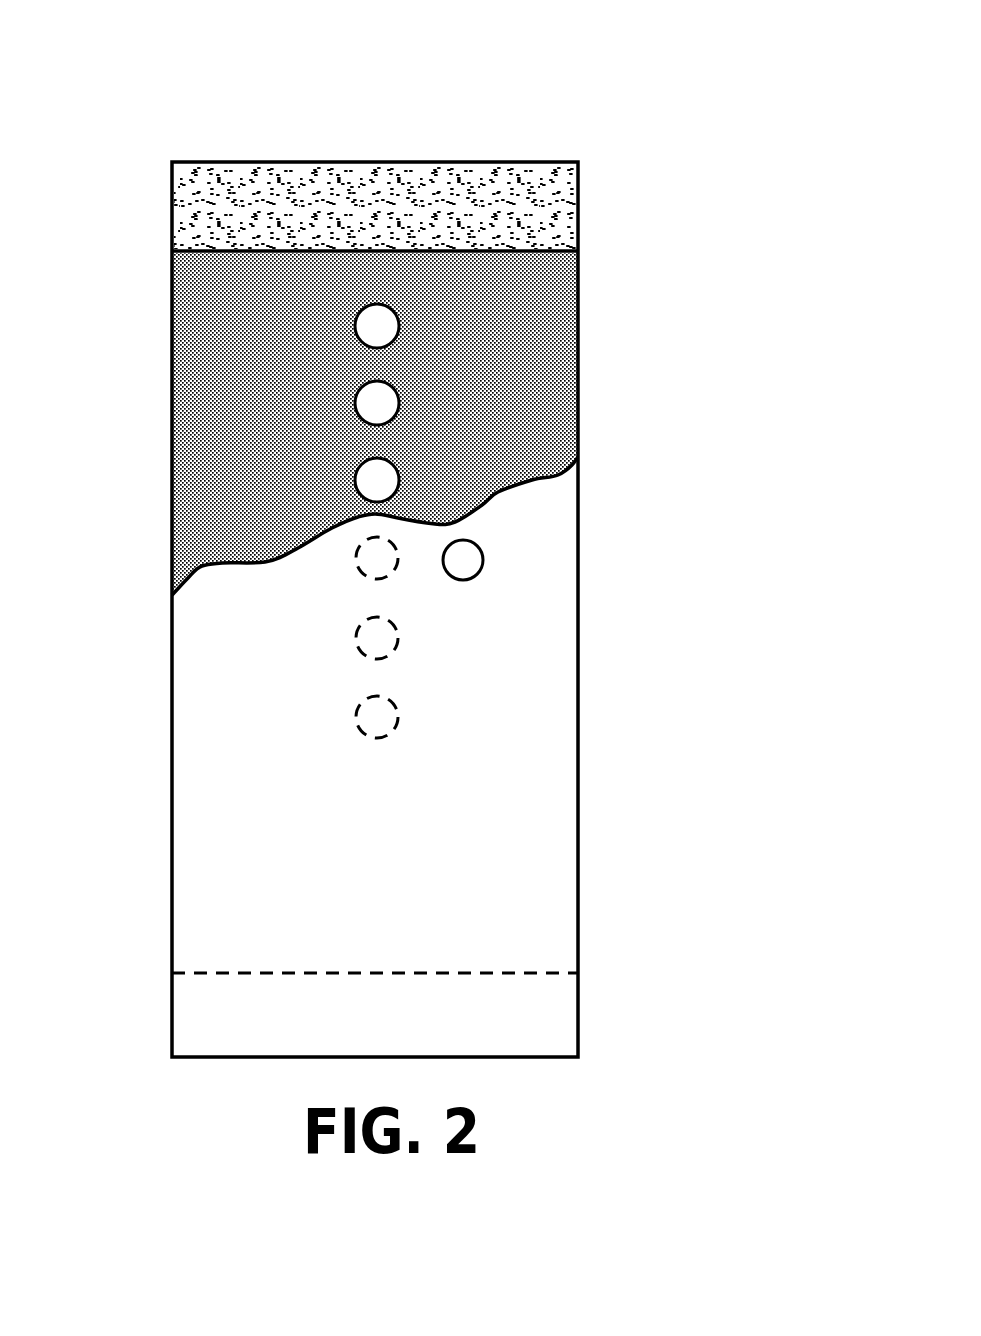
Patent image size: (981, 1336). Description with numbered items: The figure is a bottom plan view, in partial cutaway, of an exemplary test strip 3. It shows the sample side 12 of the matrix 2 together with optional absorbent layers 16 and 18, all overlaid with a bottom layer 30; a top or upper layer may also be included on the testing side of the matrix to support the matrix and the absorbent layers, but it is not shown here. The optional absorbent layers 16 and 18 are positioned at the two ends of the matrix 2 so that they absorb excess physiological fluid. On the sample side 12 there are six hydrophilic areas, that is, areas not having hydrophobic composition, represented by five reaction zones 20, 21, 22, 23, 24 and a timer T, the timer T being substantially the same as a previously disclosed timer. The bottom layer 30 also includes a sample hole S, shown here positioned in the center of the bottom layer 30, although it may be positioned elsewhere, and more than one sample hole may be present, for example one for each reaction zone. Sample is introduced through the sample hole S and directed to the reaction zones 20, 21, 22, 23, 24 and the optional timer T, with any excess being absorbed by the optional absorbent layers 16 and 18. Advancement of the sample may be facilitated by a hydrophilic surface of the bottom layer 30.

The test strip 3 is at (492, 116).
The absorbent layer 16 is at (203, 205).
The matrix 2 is at (203, 292).
The sample side 12 is at (513, 355).
The timer T is at (377, 326).
The reaction zone 24 is at (377, 403).
The reaction zone 23 is at (377, 480).
The reaction zone 22 is at (377, 558).
The reaction zone 21 is at (377, 638).
The reaction zone 20 is at (377, 717).
The sample hole S is at (463, 560).
The bottom layer 30 is at (497, 835).
The absorbent layer 18 is at (215, 1015).